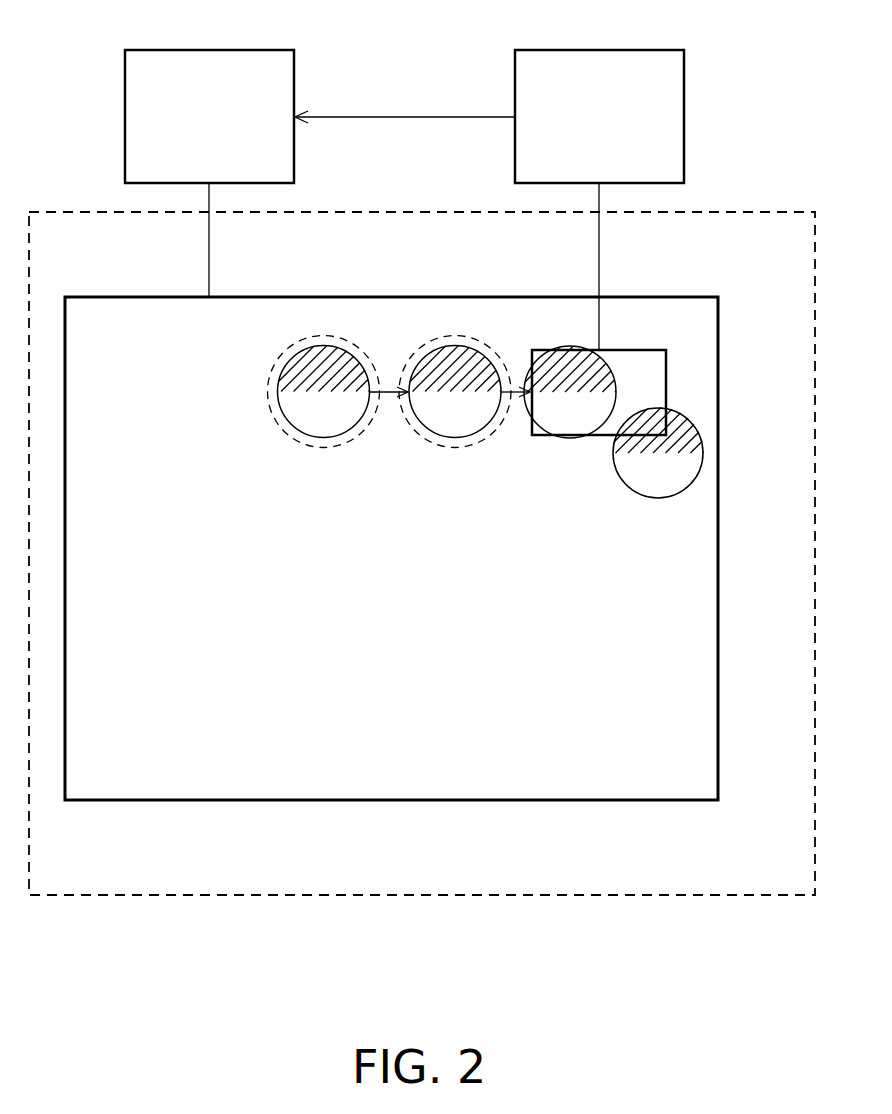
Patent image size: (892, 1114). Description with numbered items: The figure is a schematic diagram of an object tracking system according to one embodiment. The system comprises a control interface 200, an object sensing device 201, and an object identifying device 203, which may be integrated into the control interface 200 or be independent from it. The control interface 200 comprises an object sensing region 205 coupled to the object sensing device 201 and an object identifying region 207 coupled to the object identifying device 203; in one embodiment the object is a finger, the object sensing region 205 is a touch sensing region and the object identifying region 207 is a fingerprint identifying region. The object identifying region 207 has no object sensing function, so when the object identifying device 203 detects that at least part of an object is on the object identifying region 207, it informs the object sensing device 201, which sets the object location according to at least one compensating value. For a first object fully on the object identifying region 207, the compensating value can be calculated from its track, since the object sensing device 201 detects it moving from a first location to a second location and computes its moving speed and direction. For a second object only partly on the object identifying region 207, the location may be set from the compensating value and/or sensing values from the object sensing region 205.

The control interface 200 is at (735, 212).
The object sensing device 201 is at (210, 50).
The object identifying device 203 is at (605, 50).
The object sensing region 205 is at (598, 800).
The object identifying region 207 is at (667, 395).